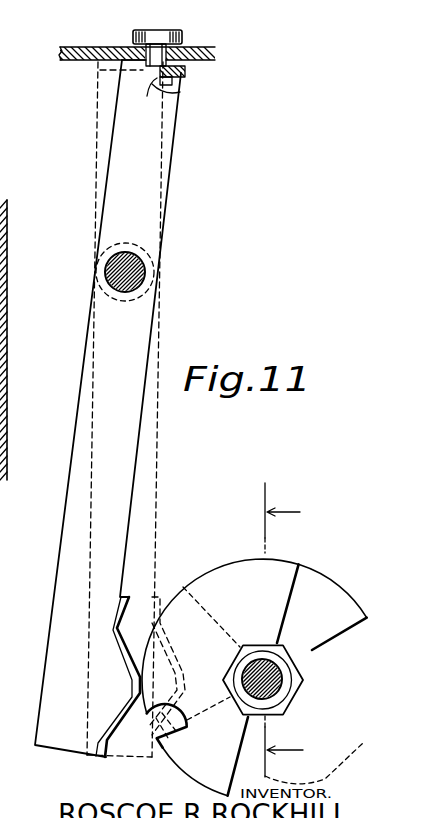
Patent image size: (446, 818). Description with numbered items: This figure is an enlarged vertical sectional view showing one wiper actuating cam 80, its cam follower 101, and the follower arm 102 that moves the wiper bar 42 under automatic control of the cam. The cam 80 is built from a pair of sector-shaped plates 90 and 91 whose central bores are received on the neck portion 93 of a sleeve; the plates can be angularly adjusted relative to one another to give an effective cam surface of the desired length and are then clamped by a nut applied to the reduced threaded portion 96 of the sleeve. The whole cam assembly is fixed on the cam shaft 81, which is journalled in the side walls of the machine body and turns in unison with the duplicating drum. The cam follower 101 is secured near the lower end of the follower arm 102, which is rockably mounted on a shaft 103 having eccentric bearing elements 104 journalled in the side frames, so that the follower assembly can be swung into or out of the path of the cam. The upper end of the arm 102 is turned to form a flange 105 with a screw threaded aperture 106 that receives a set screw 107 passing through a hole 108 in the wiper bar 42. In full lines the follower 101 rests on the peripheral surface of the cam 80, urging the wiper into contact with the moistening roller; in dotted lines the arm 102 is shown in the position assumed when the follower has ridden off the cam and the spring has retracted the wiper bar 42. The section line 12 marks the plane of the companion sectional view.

The wiper bar 42 is at (96, 47).
The hole 108 is at (157, 40).
The screw threaded aperture 106 is at (187, 70).
The flange 105 is at (174, 76).
The set screw 107 is at (152, 87).
The follower arm 102 is at (129, 452).
The shaft 103 is at (135, 249).
The eccentric bearing elements 104 is at (124, 302).
The cam follower 101 is at (125, 670).
The cam 80 is at (201, 568).
The plate 90 is at (289, 563).
The plate 91 is at (329, 584).
The neck portion 93 is at (292, 653).
The reduced threaded portion 96 is at (260, 646).
The cam shaft 81 is at (279, 693).
The section line 12- 12 is at (271, 630).